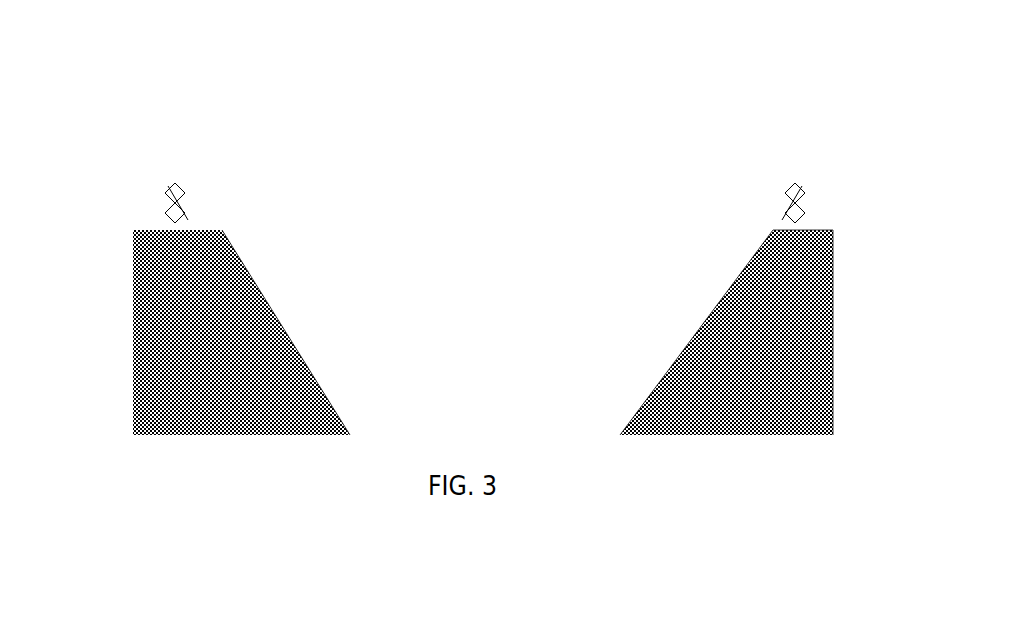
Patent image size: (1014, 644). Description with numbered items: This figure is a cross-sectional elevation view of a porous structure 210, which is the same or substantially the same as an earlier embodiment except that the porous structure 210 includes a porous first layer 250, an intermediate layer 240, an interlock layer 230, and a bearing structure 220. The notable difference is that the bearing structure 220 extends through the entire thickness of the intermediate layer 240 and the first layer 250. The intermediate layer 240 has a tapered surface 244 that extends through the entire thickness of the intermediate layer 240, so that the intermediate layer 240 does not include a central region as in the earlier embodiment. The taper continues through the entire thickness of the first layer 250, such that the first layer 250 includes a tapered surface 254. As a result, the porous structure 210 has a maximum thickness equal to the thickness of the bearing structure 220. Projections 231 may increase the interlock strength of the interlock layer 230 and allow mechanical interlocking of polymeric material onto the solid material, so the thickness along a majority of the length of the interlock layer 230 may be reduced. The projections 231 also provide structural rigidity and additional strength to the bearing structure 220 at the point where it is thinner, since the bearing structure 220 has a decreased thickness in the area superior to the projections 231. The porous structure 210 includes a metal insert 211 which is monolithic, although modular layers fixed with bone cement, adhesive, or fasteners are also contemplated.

The porous structure 210 is at (163, 92).
The metal insert 211 is at (863, 307).
The bearing structure 220 is at (610, 218).
The interlock layer 230 is at (675, 367).
The projections 231 is at (157, 197).
The intermediate layer 240 is at (790, 237).
The tapered surface 244 is at (237, 272).
The porous first layer 250 is at (780, 397).
The tapered surface 254 is at (313, 380).